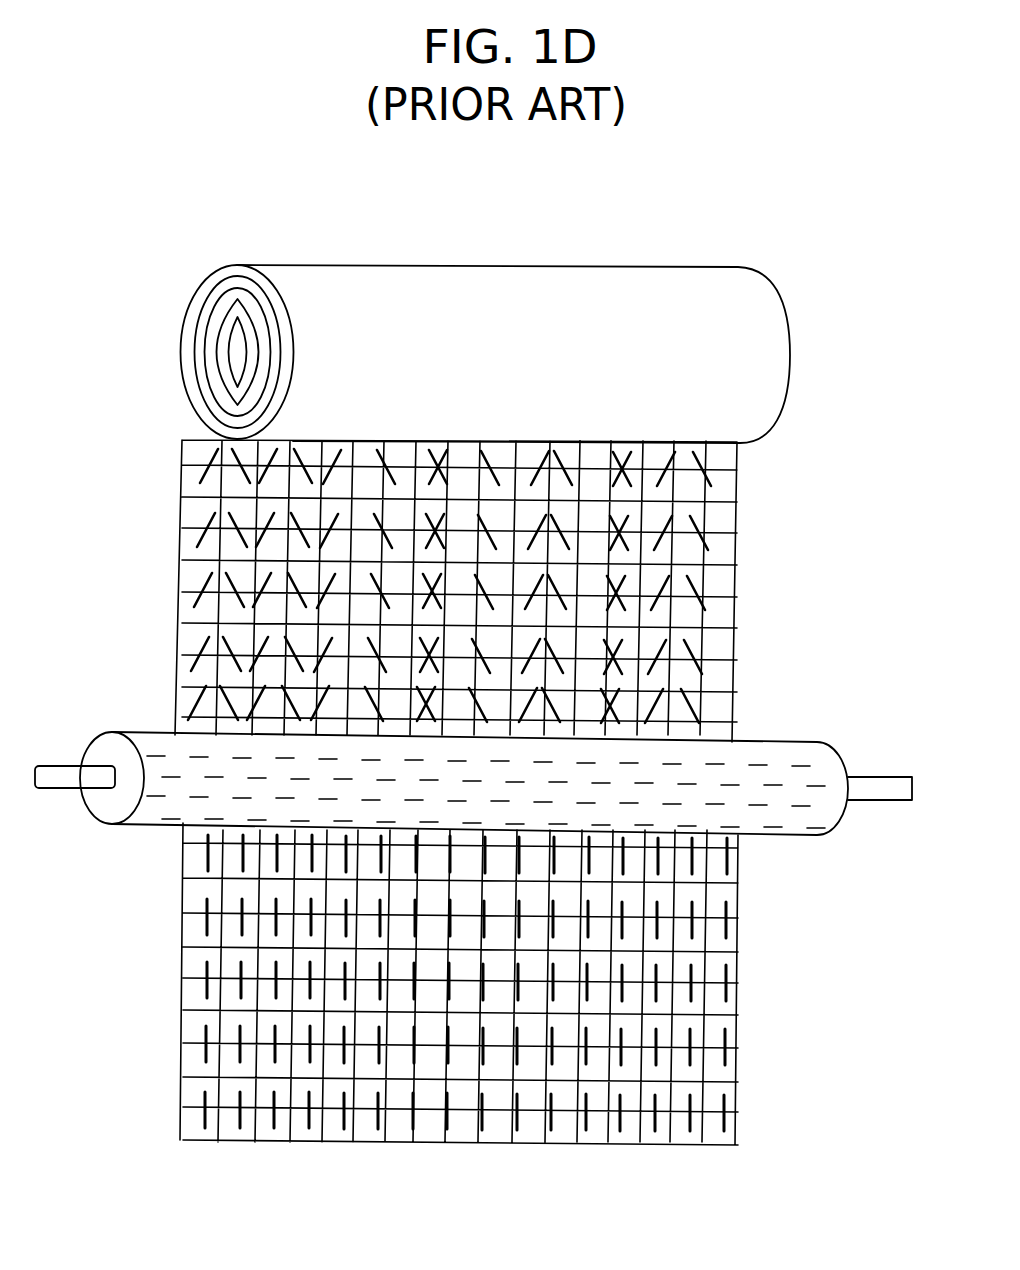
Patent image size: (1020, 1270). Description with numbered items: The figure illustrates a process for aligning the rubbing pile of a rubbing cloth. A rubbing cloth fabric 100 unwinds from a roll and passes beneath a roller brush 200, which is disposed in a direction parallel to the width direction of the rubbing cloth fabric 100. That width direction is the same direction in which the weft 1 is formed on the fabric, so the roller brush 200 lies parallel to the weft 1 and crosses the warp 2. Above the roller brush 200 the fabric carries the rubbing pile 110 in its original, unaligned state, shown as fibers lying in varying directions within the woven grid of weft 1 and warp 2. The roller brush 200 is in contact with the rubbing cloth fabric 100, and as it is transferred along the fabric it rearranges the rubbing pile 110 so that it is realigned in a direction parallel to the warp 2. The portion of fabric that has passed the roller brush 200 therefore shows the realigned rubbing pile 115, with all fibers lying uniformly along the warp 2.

The rubbing cloth fabric 100 is at (655, 252).
The rubbing pile 110 is at (723, 532).
The realigned rubbing pile 115 is at (730, 992).
The roller brush 200 is at (838, 729).
The weft 1 is at (723, 483).
The warp 2 is at (703, 573).